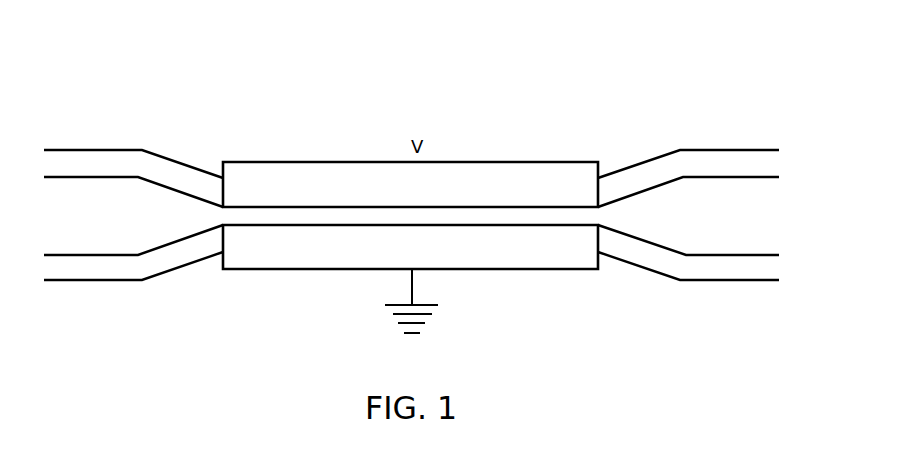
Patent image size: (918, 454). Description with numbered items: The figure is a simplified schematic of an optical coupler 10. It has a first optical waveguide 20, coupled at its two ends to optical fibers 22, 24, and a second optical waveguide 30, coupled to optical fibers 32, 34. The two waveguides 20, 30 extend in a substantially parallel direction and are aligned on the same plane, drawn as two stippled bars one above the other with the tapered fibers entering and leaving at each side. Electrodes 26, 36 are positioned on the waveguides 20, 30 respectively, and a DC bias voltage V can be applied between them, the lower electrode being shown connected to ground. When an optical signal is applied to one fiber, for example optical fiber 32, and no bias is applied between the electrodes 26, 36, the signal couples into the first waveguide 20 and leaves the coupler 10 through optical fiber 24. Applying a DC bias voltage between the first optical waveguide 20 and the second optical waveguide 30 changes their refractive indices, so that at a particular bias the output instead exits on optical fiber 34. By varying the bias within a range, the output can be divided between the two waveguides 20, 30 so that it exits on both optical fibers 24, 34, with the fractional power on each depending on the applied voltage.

The optical coupler 10 is at (530, 75).
The first optical waveguide 20 is at (522, 162).
The optical fiber 22 is at (105, 150).
The optical fiber 24 is at (717, 150).
The electrode 26 is at (300, 162).
The second optical waveguide 30 is at (522, 269).
The optical fiber 32 is at (105, 280).
The optical fiber 34 is at (717, 280).
The electrode 36 is at (300, 269).